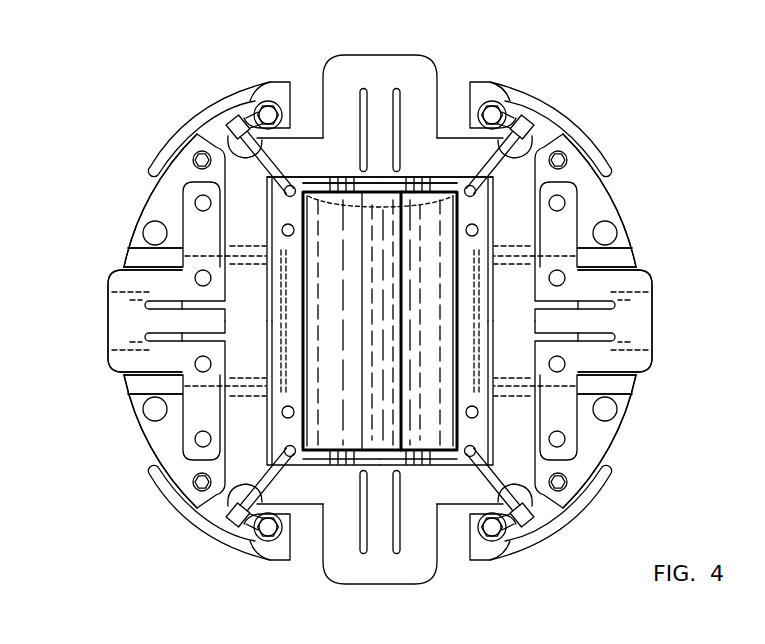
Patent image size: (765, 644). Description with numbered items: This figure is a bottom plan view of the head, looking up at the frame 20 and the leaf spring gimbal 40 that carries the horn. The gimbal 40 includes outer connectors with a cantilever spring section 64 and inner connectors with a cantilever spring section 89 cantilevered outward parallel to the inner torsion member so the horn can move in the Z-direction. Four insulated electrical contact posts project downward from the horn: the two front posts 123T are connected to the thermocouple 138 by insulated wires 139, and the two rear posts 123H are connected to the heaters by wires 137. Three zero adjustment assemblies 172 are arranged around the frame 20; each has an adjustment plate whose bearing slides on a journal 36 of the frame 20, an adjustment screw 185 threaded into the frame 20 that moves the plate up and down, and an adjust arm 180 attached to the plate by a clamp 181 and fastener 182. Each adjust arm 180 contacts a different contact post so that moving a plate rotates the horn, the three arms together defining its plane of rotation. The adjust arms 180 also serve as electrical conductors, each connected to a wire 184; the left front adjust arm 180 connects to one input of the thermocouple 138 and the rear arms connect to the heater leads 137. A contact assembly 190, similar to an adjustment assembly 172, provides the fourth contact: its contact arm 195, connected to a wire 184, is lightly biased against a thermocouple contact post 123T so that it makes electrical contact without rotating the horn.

The frame 20 is at (163, 387).
The journal 36 is at (155, 236).
The leaf spring gimbal 40 is at (85, 357).
The cantilever spring section 64 is at (115, 278).
The cantilever spring section 89 is at (343, 70).
The front contact posts 123T is at (291, 185).
The rear contact posts 123H is at (290, 450).
The heater wires 137 is at (455, 430).
The thermocouple 138 is at (383, 218).
The insulated wires 139 is at (437, 203).
The zero adjustment assembly 172 is at (116, 160).
The adjust arm 180 is at (208, 110).
The clamp 181 is at (262, 93).
The fastener 182 is at (235, 118).
The wire 184 is at (173, 137).
The adjustment screw 185 is at (213, 157).
The thermocouple contact assembly 190 is at (530, 70).
The contact arm 195 is at (488, 153).